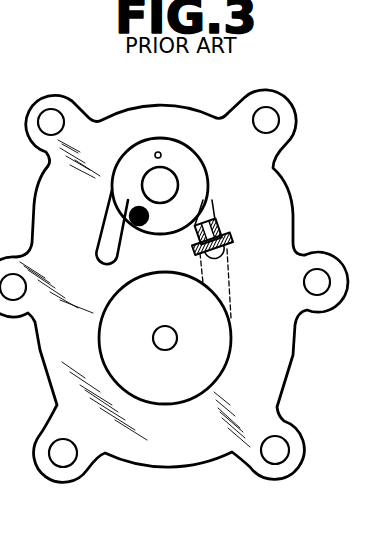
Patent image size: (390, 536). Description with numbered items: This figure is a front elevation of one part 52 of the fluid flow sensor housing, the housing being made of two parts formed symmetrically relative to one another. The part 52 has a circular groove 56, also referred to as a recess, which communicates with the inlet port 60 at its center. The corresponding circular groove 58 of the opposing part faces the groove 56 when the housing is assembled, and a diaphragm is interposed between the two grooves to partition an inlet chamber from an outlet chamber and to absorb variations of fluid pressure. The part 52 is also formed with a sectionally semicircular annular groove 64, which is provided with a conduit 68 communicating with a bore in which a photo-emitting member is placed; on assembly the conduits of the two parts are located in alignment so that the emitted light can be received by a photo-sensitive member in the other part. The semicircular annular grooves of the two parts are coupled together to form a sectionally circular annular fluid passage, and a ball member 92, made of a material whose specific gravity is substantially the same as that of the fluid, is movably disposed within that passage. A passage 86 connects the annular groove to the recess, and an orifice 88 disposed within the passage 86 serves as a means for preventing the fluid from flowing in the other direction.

The part 52 is at (183, 106).
The circular groove 56 is at (217, 360).
The circular groove 58 is at (0, 5).
The inlet port 60 is at (165, 349).
The sectionally semicircular annular groove 64 is at (192, 172).
The conduit 68 is at (158, 152).
The passage 86 is at (229, 275).
The orifice 88 is at (222, 225).
The ball member 92 is at (140, 226).